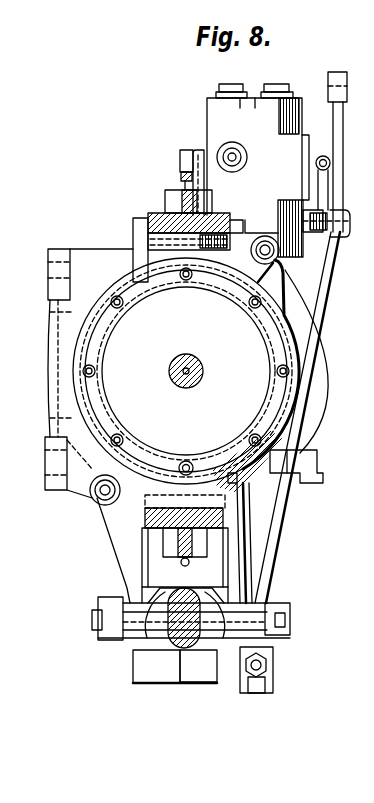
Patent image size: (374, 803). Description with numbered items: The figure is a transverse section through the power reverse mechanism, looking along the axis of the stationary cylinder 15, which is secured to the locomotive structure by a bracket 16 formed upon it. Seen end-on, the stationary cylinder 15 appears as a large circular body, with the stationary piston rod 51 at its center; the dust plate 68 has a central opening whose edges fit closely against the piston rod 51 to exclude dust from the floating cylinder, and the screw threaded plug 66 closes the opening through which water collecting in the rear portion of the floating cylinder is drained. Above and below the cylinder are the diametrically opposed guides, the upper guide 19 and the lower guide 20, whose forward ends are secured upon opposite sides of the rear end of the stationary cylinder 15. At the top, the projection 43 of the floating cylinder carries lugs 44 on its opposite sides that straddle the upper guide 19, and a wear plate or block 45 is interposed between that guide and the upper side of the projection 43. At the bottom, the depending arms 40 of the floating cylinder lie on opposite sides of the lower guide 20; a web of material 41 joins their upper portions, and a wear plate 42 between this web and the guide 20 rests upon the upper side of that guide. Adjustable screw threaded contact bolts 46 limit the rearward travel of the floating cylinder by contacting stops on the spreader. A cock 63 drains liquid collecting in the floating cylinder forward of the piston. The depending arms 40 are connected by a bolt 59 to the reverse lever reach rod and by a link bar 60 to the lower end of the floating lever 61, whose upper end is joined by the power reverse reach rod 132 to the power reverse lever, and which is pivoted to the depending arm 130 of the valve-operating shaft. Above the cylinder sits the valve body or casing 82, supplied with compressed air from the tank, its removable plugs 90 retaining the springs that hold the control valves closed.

The cylinder 15 is at (296, 331).
The bracket 16 is at (77, 254).
The guide 19 is at (205, 222).
The guide 20 is at (191, 623).
The depending arms 40 is at (140, 546).
The web of material 41 is at (243, 490).
The wear plate 42 is at (242, 502).
The projection 43 is at (150, 253).
The lugs 44 is at (160, 216).
The wear plate or block 45 is at (185, 240).
The contact bolts 46 is at (282, 255).
The piston rod 51 is at (203, 371).
The bolt 59 is at (288, 612).
The link bar 60 is at (273, 651).
The floating lever 61 is at (313, 393).
The cock 63 is at (306, 456).
The screw threaded plug 66 is at (190, 463).
The dust plate 68 is at (88, 377).
The valve body or casing 82 is at (258, 177).
The removable plugs 90 is at (278, 84).
The depending arm 130 is at (328, 194).
The power reverse reach rod 132 is at (343, 224).